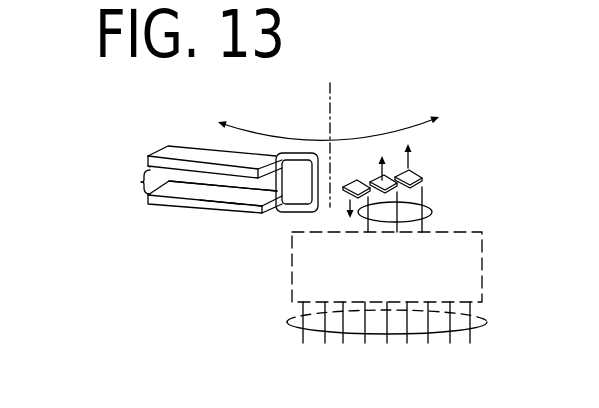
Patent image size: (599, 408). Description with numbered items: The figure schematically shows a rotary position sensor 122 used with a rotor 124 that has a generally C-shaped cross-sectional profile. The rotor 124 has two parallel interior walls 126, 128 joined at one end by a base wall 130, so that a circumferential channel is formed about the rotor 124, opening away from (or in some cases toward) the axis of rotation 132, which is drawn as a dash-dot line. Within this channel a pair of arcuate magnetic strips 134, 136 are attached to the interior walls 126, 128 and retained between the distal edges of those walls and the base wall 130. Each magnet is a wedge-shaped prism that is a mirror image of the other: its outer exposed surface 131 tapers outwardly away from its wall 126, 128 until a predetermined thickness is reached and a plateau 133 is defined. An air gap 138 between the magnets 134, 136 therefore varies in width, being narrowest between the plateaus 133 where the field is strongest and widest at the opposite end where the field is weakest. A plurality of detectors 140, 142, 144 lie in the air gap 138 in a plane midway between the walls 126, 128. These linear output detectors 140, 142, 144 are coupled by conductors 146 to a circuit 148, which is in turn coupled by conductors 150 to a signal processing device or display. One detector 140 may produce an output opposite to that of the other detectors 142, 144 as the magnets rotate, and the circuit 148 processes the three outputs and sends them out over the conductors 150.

The position sensor 122 is at (115, 140).
The rotor 124 is at (180, 146).
The interior wall 126 is at (190, 168).
The interior wall 128 is at (225, 197).
The base wall 130 is at (297, 182).
The outer exposed surface 131 is at (252, 192).
The axis of rotation 132 is at (330, 95).
The plateau 133 is at (172, 194).
The magnetic strip 134 is at (158, 164).
The magnetic strip 136 is at (195, 196).
The air gap 138 is at (140, 182).
The detector 140 is at (357, 183).
The detector 142 is at (388, 177).
The detector 144 is at (426, 180).
The conductors 146 is at (432, 211).
The circuit 148 is at (398, 280).
The conductors 150 is at (485, 318).